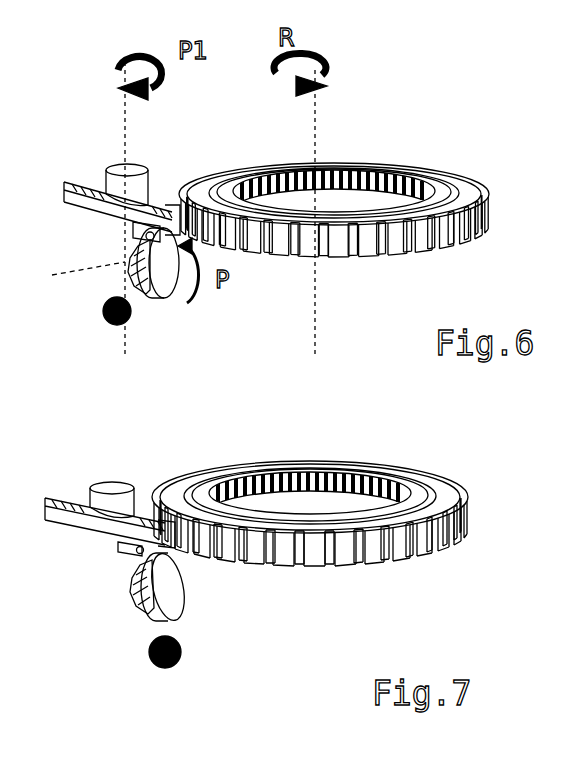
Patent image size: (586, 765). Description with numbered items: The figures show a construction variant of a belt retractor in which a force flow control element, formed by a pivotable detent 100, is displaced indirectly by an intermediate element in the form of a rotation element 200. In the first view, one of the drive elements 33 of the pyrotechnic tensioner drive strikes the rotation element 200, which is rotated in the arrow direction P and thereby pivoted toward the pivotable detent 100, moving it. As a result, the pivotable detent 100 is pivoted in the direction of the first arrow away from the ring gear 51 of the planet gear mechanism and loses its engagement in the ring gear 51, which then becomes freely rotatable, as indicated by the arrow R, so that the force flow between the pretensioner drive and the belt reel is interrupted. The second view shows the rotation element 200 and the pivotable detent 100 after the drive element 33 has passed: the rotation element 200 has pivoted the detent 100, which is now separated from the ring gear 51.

In FIG. 6, the drive element 33 is at (103, 314).
In FIG. 7, the drive element 33 is at (148, 653).
In FIG. 6, the ring gear 51 is at (397, 237).
In FIG. 7, the ring gear 51 is at (298, 555).
In FIG. 6, the pivotable detent 100 is at (75, 182).
In FIG. 7, the pivotable detent 100 is at (117, 507).
In FIG. 6, the rotation element 200 is at (157, 287).
In FIG. 7, the rotation element 200 is at (175, 583).